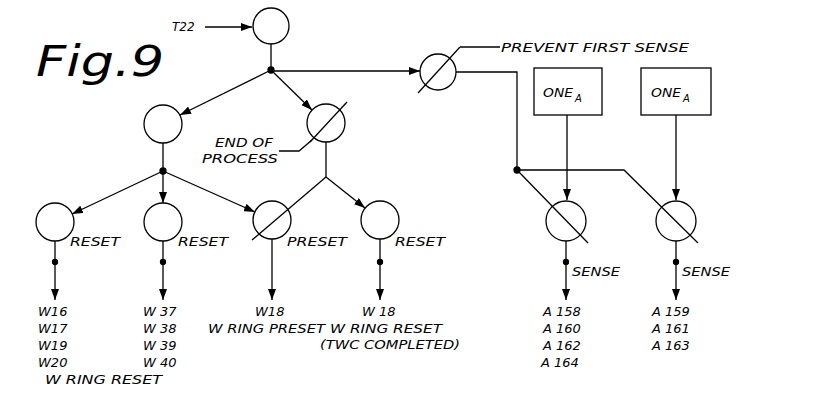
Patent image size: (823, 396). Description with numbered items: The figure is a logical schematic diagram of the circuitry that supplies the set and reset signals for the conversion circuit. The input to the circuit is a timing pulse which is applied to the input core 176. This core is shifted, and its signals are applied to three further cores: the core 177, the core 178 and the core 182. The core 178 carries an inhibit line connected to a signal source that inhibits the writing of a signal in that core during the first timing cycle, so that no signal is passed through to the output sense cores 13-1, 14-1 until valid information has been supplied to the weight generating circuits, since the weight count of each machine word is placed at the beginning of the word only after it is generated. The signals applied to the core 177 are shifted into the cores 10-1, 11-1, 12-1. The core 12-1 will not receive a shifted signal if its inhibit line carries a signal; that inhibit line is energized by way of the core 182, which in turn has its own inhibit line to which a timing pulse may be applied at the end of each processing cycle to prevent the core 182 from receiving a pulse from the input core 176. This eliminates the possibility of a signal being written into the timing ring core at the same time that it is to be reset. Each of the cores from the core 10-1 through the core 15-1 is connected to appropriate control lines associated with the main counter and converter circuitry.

The input core 176 is at (271, 26).
The core 177 is at (163, 124).
The core 182 is at (327, 122).
The core 178 is at (439, 70).
The core 10-1 is at (55, 222).
The core 11-1 is at (163, 222).
The core 12-1 is at (272, 220).
The core 15-1 is at (380, 220).
The output sense core 13-1 is at (566, 221).
The output sense core 14-1 is at (676, 221).